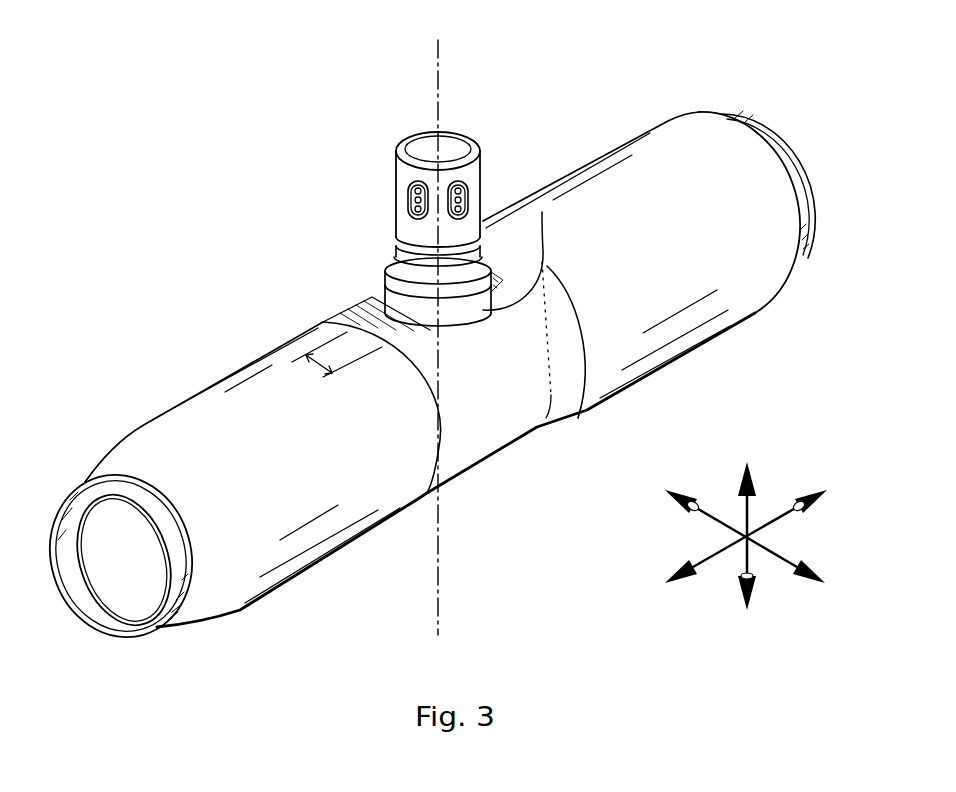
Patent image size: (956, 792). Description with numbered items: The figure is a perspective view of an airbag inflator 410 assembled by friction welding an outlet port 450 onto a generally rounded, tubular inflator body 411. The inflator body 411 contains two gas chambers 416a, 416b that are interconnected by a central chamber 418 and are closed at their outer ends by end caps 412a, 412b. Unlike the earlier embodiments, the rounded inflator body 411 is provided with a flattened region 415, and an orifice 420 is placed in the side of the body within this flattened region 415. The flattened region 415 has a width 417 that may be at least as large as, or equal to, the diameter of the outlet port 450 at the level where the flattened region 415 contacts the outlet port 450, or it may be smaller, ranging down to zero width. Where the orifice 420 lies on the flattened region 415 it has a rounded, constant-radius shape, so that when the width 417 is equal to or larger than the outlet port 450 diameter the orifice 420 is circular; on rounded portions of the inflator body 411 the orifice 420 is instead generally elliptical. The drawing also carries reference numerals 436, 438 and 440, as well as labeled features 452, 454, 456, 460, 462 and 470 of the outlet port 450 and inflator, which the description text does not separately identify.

The airbag inflator 410 is at (210, 313).
The inflator body 411 is at (503, 437).
The end cap 412a is at (787, 148).
The end cap 412b is at (182, 577).
The flattened region 415 is at (367, 310).
The gas chamber 416a is at (763, 306).
The gas chamber 416b is at (298, 518).
The width of the flattened region 417 is at (322, 360).
The central chamber 418 is at (503, 471).
The orifice 420 is at (542, 212).
The vertical axis direction 436 is at (745, 502).
The transverse axis direction 438 is at (788, 508).
The longitudinal axis direction 440 is at (783, 556).
The outlet port 450 is at (363, 207).
The nozzle cap 452 is at (420, 142).
The nozzle sidewall 454 is at (483, 203).
The discharge aperture 456 is at (420, 197).
The neck 460 is at (402, 270).
The base flange 462 is at (470, 318).
The central axis 470 is at (438, 606).